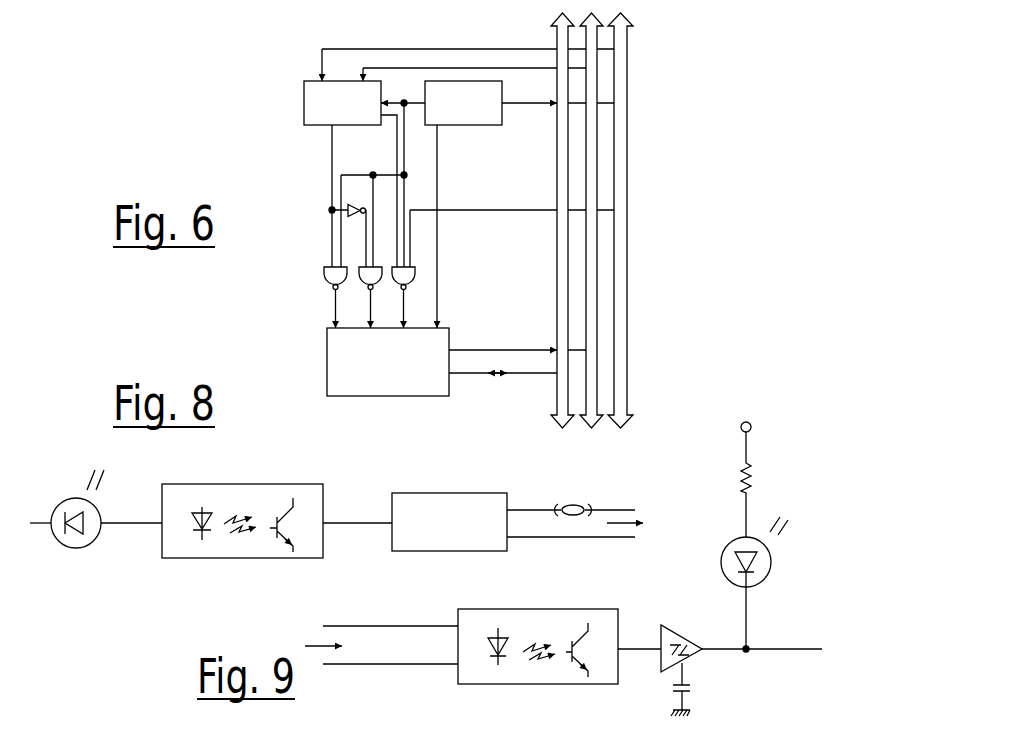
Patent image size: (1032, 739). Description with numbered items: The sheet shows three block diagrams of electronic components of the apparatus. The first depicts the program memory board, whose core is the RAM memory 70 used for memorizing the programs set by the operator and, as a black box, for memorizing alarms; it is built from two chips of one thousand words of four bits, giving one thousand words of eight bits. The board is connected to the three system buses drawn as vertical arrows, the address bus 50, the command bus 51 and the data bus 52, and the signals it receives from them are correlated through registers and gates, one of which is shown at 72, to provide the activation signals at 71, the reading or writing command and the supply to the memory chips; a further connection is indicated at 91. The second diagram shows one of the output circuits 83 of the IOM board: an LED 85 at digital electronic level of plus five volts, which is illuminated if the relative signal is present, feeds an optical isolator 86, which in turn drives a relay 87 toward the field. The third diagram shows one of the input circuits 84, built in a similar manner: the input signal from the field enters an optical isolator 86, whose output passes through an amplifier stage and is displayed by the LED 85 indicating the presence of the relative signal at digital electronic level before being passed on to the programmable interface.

In FIG. 6, the address bus 50 is at (591, 288).
In FIG. 6, the command bus 51 is at (628, 252).
In FIG. 6, the data bus 52 is at (560, 249).
In FIG. 6, the RAM memory 70 is at (418, 385).
In FIG. 6, the activation signals 71 is at (318, 115).
In FIG. 6, the register 72 is at (482, 117).
In FIG. 8, the output circuits 83 is at (242, 522).
In FIG. 9, the input circuits 84 is at (532, 649).
In FIG. 8, the LED 85 is at (65, 493).
In FIG. 9, the LED 85 is at (782, 557).
In FIG. 8, the optical isolator 86 is at (253, 493).
In FIG. 9, the optical isolator 86 is at (523, 623).
In FIG. 8, the relay 87 is at (452, 503).
In FIG. 6, the line 91 is at (311, 6).